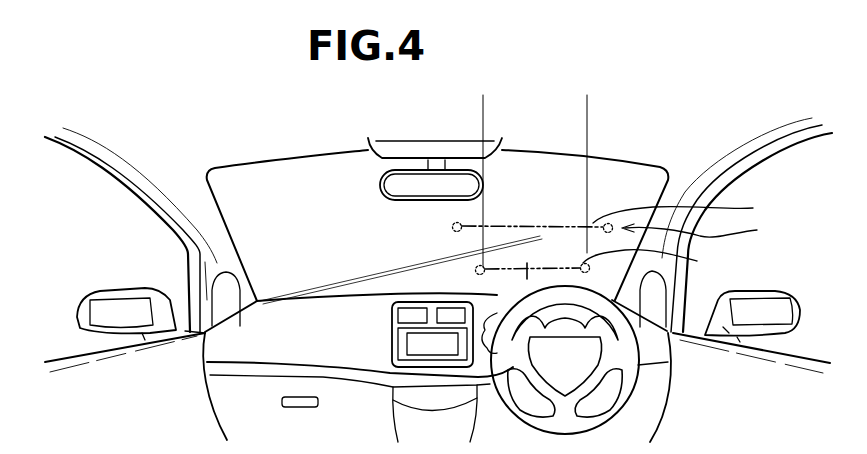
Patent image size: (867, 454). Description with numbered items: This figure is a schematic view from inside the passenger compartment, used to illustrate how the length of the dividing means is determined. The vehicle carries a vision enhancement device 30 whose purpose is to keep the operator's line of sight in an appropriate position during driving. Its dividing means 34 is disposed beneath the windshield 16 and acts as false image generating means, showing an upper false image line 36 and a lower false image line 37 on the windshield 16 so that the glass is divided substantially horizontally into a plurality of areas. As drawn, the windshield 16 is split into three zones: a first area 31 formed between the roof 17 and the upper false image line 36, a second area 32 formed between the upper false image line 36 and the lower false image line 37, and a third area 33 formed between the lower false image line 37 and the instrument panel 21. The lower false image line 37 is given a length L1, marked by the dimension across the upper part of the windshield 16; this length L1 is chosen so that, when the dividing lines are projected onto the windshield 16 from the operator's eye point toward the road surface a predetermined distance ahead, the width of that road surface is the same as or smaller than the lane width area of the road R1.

The vision enhancement device 30 is at (165, 51).
The roof 17 is at (211, 110).
The windshield 16 is at (645, 180).
The instrument panel 21 is at (342, 302).
The road R1 is at (392, 273).
The length L1 is at (587, 98).
The first area 31 is at (540, 197).
The second area 32 is at (557, 250).
The third area 33 is at (527, 265).
The upper false image line 36 is at (730, 207).
The dividing means 34 is at (757, 230).
The lower false image line 37 is at (697, 261).